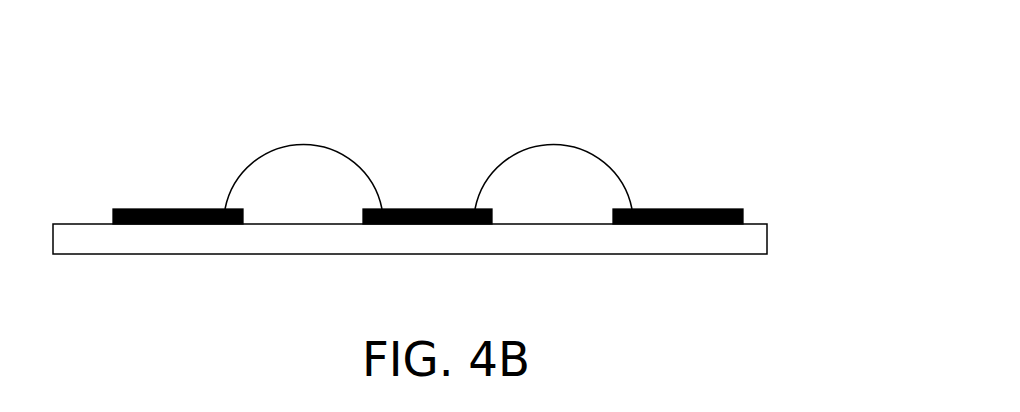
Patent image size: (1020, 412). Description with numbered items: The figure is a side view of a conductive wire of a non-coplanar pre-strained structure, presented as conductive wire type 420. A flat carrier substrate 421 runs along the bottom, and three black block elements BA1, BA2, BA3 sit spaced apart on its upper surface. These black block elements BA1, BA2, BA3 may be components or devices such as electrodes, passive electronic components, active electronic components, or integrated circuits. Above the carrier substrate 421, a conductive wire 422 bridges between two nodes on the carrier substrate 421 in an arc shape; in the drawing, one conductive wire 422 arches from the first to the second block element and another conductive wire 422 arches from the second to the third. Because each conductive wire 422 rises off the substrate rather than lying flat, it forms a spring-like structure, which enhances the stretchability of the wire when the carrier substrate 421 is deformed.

The conductive wire type 420 is at (849, 338).
The carrier substrate 421 is at (750, 240).
The conductive wire 422 is at (304, 142).
The black block element BA1 is at (183, 208).
The black block element BA2 is at (433, 208).
The black block element BA3 is at (692, 208).